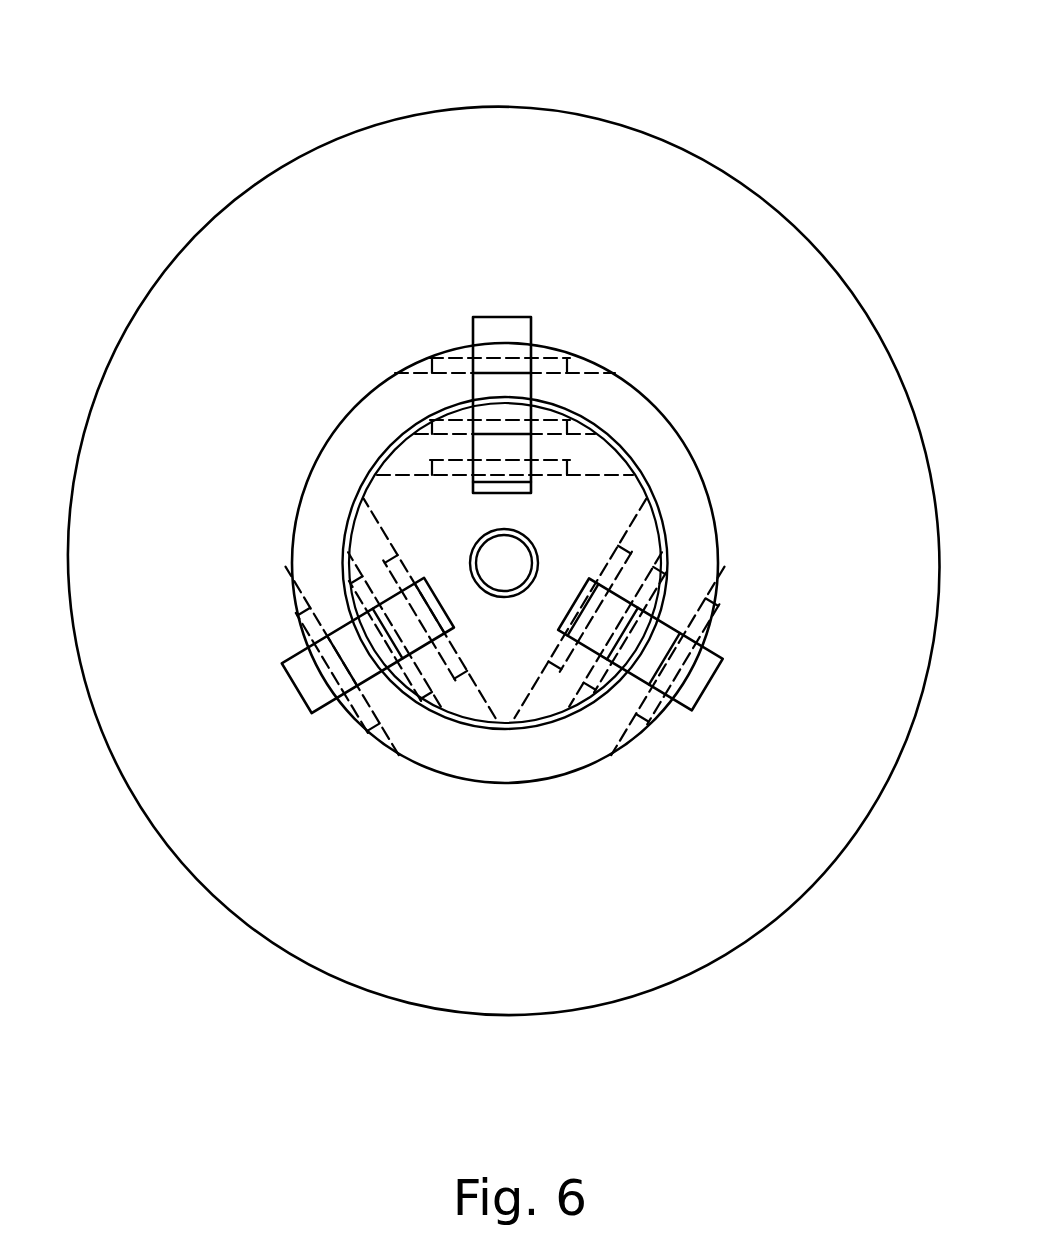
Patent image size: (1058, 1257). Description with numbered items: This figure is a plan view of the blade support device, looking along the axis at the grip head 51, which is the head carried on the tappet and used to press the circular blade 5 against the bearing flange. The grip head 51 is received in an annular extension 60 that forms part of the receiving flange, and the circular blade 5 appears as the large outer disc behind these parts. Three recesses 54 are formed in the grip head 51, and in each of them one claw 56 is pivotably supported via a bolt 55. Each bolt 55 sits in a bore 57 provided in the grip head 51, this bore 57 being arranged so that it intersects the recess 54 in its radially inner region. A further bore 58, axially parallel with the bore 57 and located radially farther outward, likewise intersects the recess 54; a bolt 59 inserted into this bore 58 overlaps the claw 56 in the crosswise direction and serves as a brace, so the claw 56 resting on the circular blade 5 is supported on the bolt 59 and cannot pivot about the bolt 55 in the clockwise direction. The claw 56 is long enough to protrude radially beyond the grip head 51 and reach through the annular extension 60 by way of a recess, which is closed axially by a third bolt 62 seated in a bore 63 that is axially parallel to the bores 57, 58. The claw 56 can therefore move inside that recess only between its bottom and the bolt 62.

The circular blade 5 is at (643, 240).
The grip head 51 is at (505, 720).
The recesses 54 is at (590, 580).
The bolt 55 is at (577, 670).
The claw 56 is at (498, 333).
The bore 57 is at (550, 720).
The bore 58 is at (653, 593).
The bolt 59 is at (508, 426).
The annular extension 60 is at (437, 740).
The third bolt 62 is at (507, 368).
The bore 63 is at (423, 360).